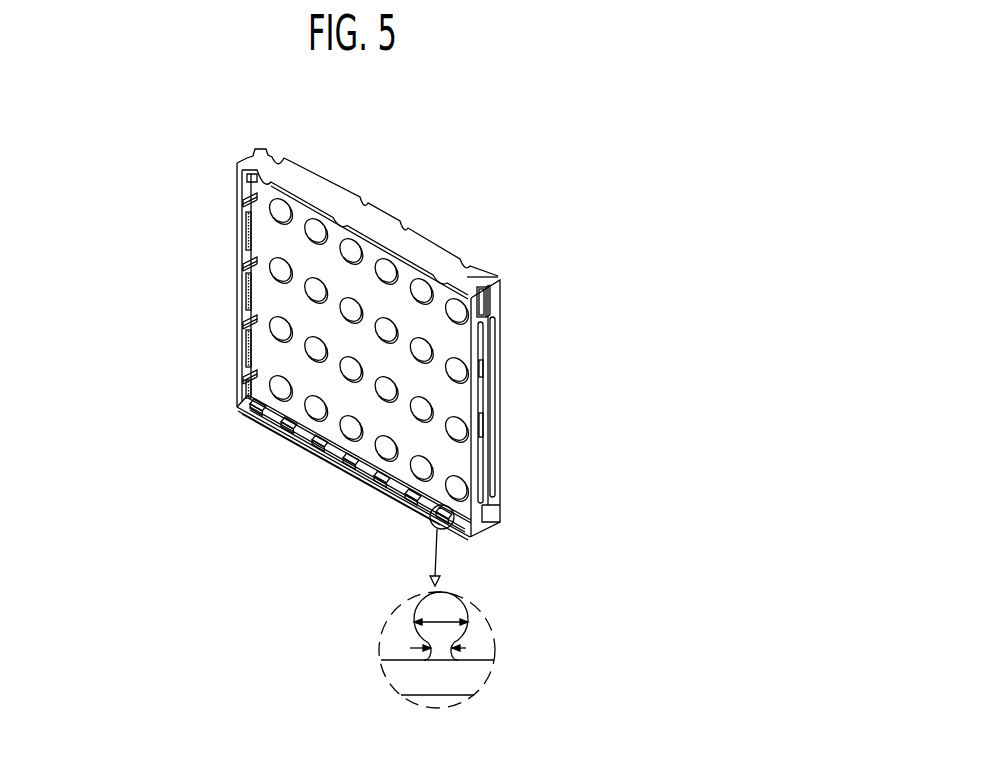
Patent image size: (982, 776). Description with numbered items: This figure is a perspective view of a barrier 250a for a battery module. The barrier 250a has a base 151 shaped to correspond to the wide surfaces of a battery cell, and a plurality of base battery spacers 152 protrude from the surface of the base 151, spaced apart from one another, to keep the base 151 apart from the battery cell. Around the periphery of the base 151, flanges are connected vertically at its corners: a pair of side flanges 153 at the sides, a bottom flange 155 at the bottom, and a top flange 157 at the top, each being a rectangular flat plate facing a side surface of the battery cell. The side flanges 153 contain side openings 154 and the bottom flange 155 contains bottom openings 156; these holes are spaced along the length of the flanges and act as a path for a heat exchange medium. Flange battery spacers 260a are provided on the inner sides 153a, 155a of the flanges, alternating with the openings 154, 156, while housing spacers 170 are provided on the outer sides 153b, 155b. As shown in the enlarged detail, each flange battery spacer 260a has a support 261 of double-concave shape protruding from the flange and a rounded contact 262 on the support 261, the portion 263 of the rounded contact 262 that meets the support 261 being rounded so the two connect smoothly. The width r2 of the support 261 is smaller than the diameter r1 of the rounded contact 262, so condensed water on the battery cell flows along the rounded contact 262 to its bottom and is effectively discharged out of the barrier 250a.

The barrier 250a is at (508, 148).
The base 151 is at (340, 256).
The base battery spacer 152 is at (308, 224).
The side flange 153 is at (118, 238).
The inner side of side flange 153a is at (243, 241).
The outer side of side flange 153b is at (240, 297).
The side opening 154 is at (255, 183).
The bottom flange 155 is at (150, 440).
The inner side of bottom flange 155a is at (257, 415).
The outer side of bottom flange 155b is at (273, 428).
The bottom opening 156 is at (398, 482).
The top flange 157 is at (288, 176).
The housing spacer 170 is at (478, 497).
The flange battery spacer 260a is at (247, 322).
The support 261 is at (440, 655).
The rounded contact 262 is at (420, 610).
The rounded portion of rounded contact 263 is at (455, 643).
The diameter of rounded contact r1 is at (441, 611).
The width of support r2 is at (428, 648).